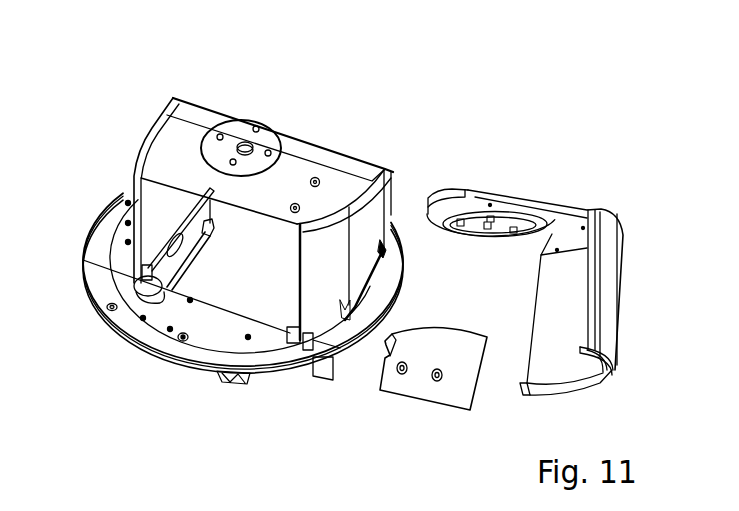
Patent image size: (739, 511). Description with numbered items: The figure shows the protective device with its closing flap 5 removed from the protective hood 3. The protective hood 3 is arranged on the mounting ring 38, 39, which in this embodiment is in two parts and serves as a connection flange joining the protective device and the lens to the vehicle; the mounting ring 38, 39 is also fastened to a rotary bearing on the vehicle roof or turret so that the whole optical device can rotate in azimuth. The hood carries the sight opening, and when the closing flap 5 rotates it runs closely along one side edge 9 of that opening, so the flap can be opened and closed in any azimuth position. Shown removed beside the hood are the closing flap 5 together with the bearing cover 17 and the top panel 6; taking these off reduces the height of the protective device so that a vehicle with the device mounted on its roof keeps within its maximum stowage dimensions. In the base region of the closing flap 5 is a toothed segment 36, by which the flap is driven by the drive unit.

The protective hood 3 is at (170, 143).
The side edge 9 is at (130, 203).
The mounting ring 39 is at (100, 243).
The mounting ring 38 is at (107, 293).
The bearing cover 17 is at (450, 197).
The closing flap 5 is at (617, 240).
The toothed segment 36 is at (610, 358).
The top panel 6 is at (455, 392).